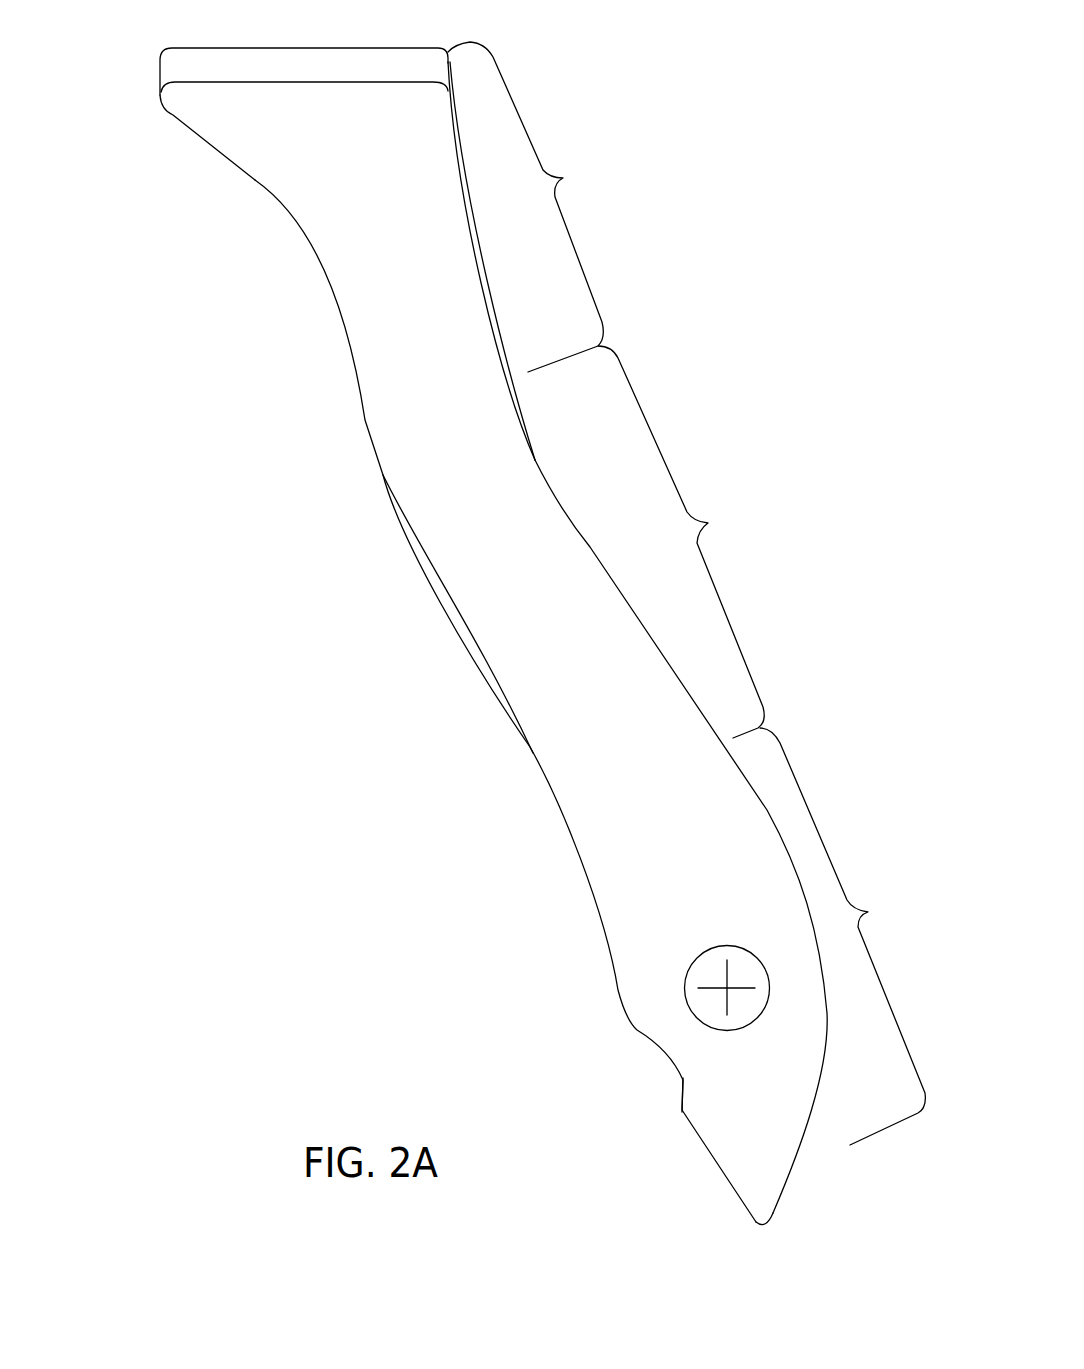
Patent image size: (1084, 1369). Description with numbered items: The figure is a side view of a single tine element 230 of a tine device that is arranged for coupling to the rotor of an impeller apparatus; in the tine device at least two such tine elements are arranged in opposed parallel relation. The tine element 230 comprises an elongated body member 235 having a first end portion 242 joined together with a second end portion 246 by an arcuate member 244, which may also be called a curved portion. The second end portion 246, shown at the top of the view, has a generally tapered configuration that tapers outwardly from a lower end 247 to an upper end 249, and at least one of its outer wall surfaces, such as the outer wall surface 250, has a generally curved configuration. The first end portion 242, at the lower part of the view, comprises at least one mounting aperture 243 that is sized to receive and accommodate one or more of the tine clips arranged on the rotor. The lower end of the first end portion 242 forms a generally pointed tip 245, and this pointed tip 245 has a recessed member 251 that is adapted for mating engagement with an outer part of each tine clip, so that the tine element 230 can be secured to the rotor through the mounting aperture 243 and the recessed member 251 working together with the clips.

The tine element 230 is at (447, 669).
The body member 235 is at (492, 843).
The first end portion 242 is at (845, 936).
The mounting aperture 243 is at (727, 988).
The arcuate member 244 is at (681, 542).
The pointed tip 245 is at (763, 1226).
The second end portion 246 is at (535, 207).
The lower end 247 is at (333, 347).
The upper end 249 is at (167, 122).
The outer wall surface 250 is at (260, 183).
The recessed member 251 is at (682, 1085).